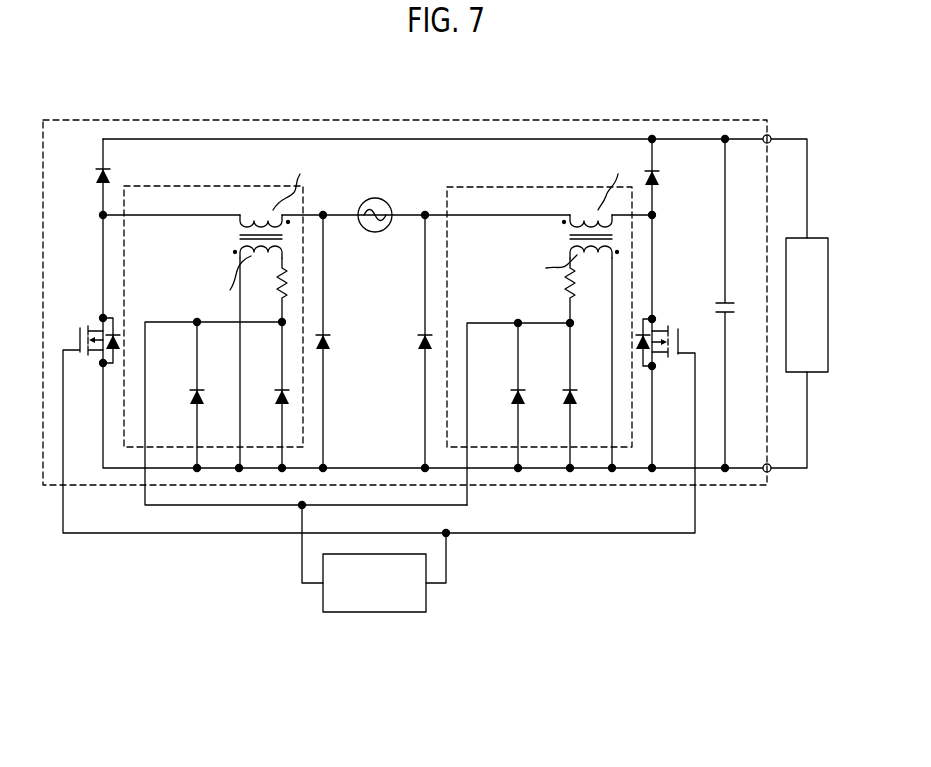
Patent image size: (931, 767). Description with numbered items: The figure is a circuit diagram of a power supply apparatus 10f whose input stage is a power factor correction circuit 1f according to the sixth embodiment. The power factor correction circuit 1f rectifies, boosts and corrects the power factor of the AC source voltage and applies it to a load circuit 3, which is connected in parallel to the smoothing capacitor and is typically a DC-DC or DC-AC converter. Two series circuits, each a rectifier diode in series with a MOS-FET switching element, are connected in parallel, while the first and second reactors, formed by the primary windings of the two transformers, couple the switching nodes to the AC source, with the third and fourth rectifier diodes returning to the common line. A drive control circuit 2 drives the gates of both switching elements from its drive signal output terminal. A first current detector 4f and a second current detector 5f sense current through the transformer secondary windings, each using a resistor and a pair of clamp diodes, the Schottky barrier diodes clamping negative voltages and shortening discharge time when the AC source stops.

The power supply apparatus 10f is at (81, 91).
The power factor correction circuit 1f is at (247, 120).
The drive control circuit 2 is at (373, 613).
The load circuit 3 is at (828, 246).
The first current detector 4f is at (540, 449).
The second current detector 5f is at (220, 449).